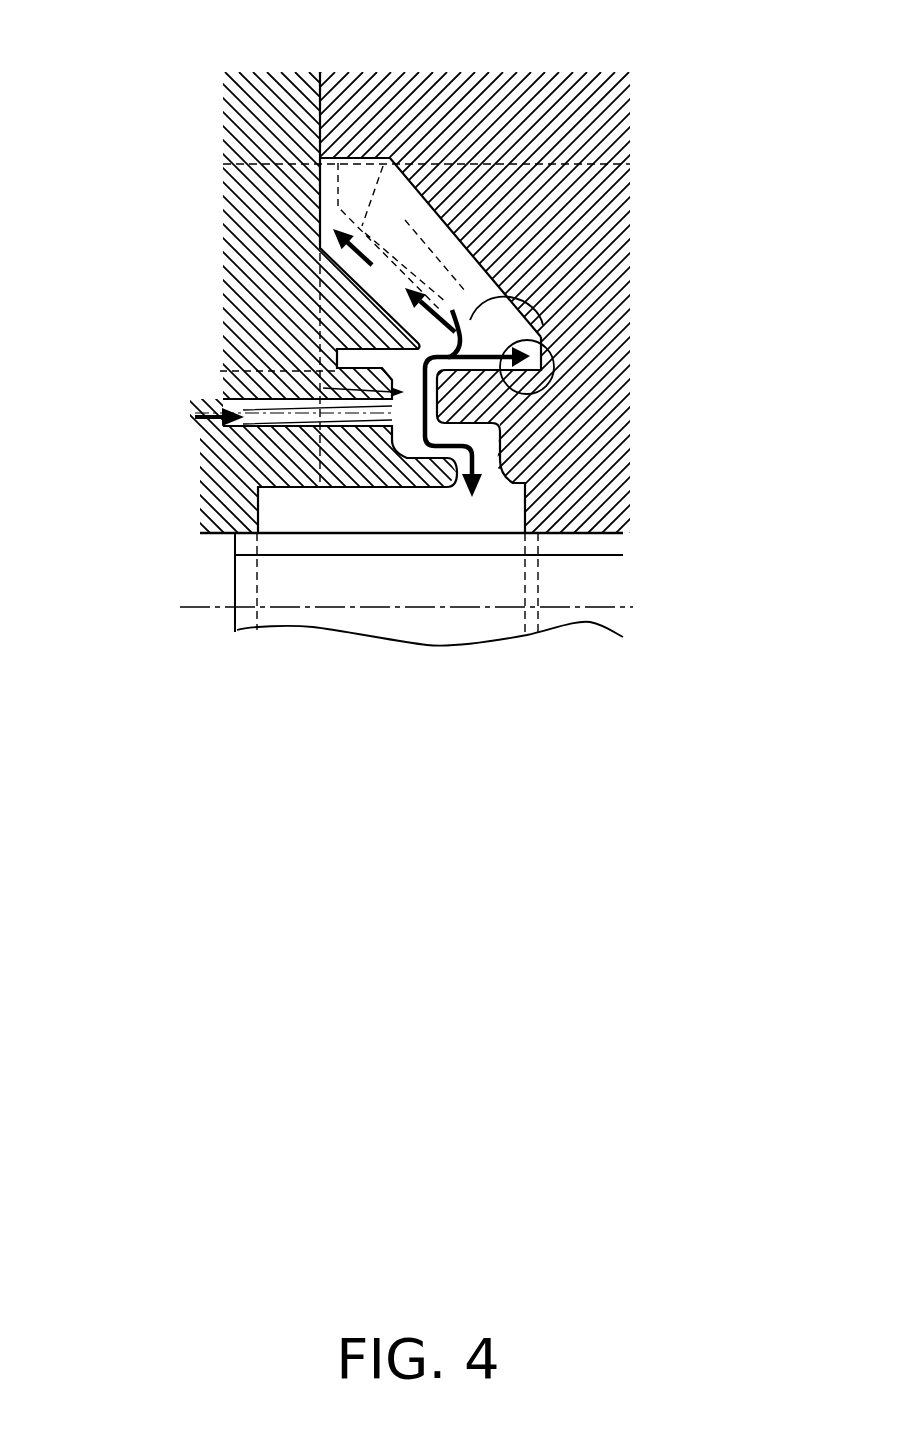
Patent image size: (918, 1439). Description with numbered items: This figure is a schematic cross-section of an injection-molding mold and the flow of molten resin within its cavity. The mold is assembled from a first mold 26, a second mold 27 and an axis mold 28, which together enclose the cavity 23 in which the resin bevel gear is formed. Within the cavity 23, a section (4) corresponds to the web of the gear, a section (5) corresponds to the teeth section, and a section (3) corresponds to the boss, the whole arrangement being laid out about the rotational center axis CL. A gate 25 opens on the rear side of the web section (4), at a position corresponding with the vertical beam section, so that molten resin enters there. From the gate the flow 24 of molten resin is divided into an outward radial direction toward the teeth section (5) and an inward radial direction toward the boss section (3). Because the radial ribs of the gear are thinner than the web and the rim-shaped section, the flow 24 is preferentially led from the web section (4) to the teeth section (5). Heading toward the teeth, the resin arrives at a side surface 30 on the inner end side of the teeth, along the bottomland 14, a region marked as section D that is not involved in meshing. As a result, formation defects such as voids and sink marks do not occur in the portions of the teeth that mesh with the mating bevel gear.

The bottomland 14 is at (353, 158).
The section corresponding to the teeth section 5 is at (420, 193).
The second mold 27 is at (628, 113).
The first mold 26 is at (225, 145).
The flow of molten resin 24 is at (327, 237).
The cavity 23 is at (670, 208).
The side surface 30 is at (548, 333).
The section D is at (552, 376).
The section corresponding to the web 4 is at (222, 372).
The gate 25 is at (252, 427).
The section corresponding to the boss 3 is at (345, 517).
The axis mold 28 is at (473, 626).
The rotational center axis CL is at (587, 607).